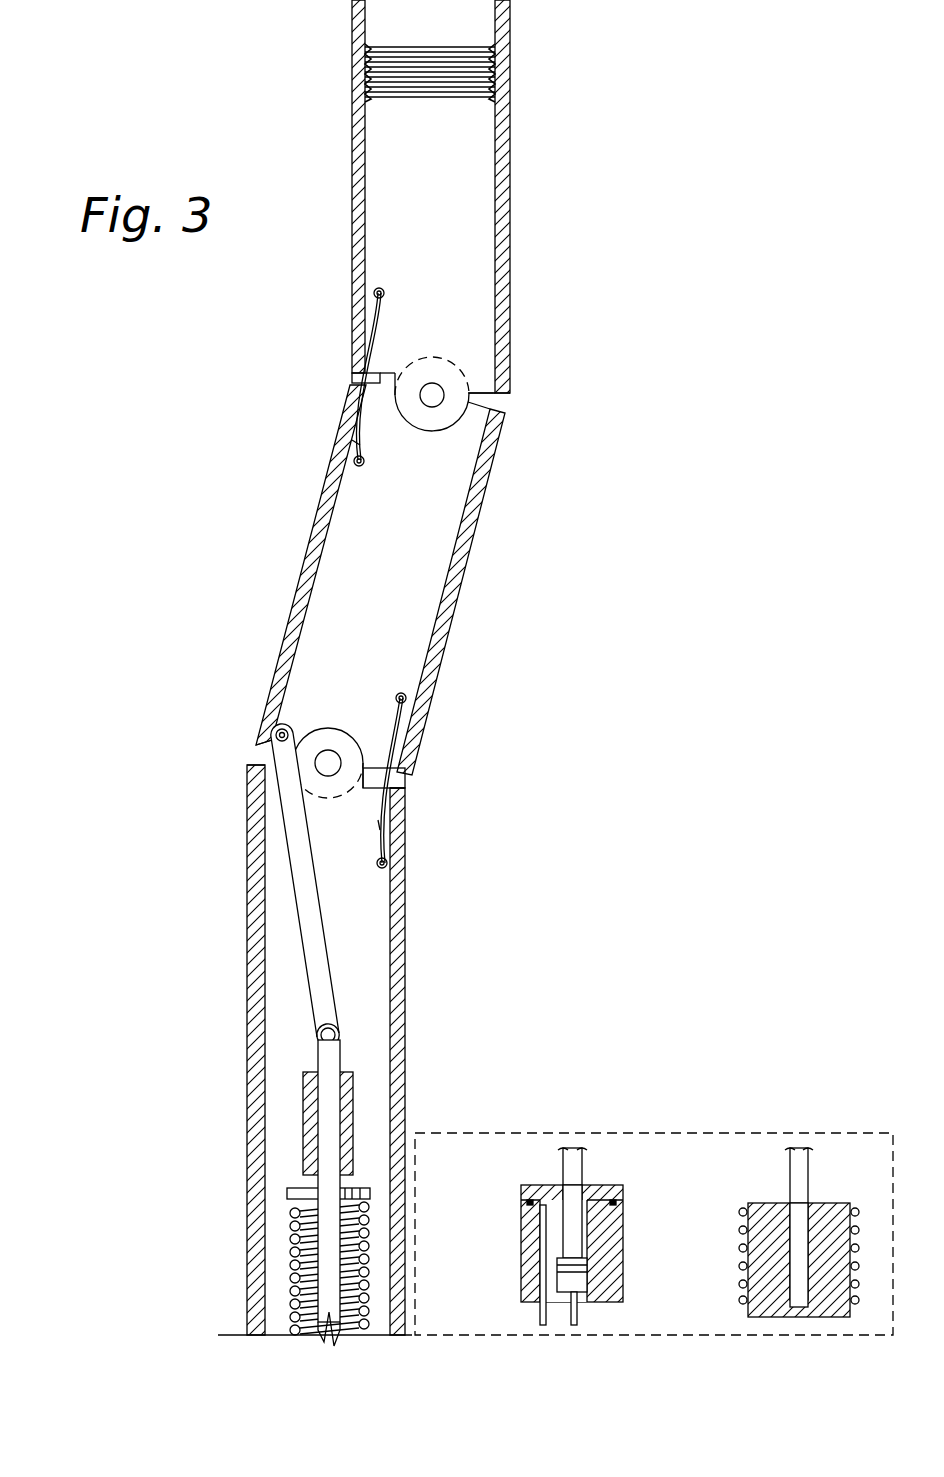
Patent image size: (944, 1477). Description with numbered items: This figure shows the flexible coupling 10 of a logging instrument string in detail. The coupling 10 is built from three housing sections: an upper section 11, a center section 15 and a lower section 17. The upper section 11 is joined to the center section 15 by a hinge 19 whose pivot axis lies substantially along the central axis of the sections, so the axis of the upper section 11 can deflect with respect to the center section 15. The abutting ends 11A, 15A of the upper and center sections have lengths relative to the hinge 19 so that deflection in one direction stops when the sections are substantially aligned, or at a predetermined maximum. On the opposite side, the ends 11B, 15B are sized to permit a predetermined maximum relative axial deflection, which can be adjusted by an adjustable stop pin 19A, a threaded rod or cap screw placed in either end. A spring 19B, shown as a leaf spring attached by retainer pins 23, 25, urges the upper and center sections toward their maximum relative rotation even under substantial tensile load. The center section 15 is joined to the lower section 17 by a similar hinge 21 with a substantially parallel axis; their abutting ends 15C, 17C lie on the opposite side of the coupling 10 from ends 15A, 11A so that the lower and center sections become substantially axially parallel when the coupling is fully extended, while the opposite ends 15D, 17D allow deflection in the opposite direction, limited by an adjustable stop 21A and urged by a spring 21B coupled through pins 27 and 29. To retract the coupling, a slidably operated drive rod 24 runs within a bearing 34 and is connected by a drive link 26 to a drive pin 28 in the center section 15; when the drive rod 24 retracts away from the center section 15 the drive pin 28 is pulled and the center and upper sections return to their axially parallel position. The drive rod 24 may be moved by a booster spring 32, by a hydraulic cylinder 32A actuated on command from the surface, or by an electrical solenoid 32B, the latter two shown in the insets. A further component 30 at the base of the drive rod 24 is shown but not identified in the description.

The coupling 10 is at (150, 838).
The upper section 11 is at (247, 992).
The abutting end of upper section 11A is at (252, 765).
The opposite end of upper section 11B is at (408, 788).
The center section 15 is at (295, 590).
The abutting end of center section 15A is at (262, 742).
The opposite end of center section 15B is at (405, 775).
The abutting end of center section toward lower section 15C is at (505, 413).
The opposite end of center section toward lower section 15D is at (352, 387).
The lower section 17 is at (513, 176).
The abutting end of lower section 17C is at (512, 393).
The opposite end of lower section 17D is at (352, 378).
The hinge 19 is at (335, 776).
The adjustable stop pin 19A is at (380, 765).
The spring 19B is at (400, 815).
The hinge 21 is at (445, 383).
The adjustable stop 21A is at (397, 372).
The spring 21B is at (367, 440).
The retainer pin 23 is at (376, 862).
The drive rod 24 is at (325, 1055).
The retainer pin 25 is at (396, 694).
The drive link 26 is at (325, 898).
The pin 27 is at (365, 467).
The drive pin 28 is at (288, 729).
The pin 29 is at (386, 293).
The spring seat plate 30 is at (290, 1192).
The booster spring 32 is at (290, 1268).
The hydraulic cylinder 32A is at (520, 1255).
The electrical solenoid 32B is at (746, 1255).
The bearing 34 is at (305, 1115).